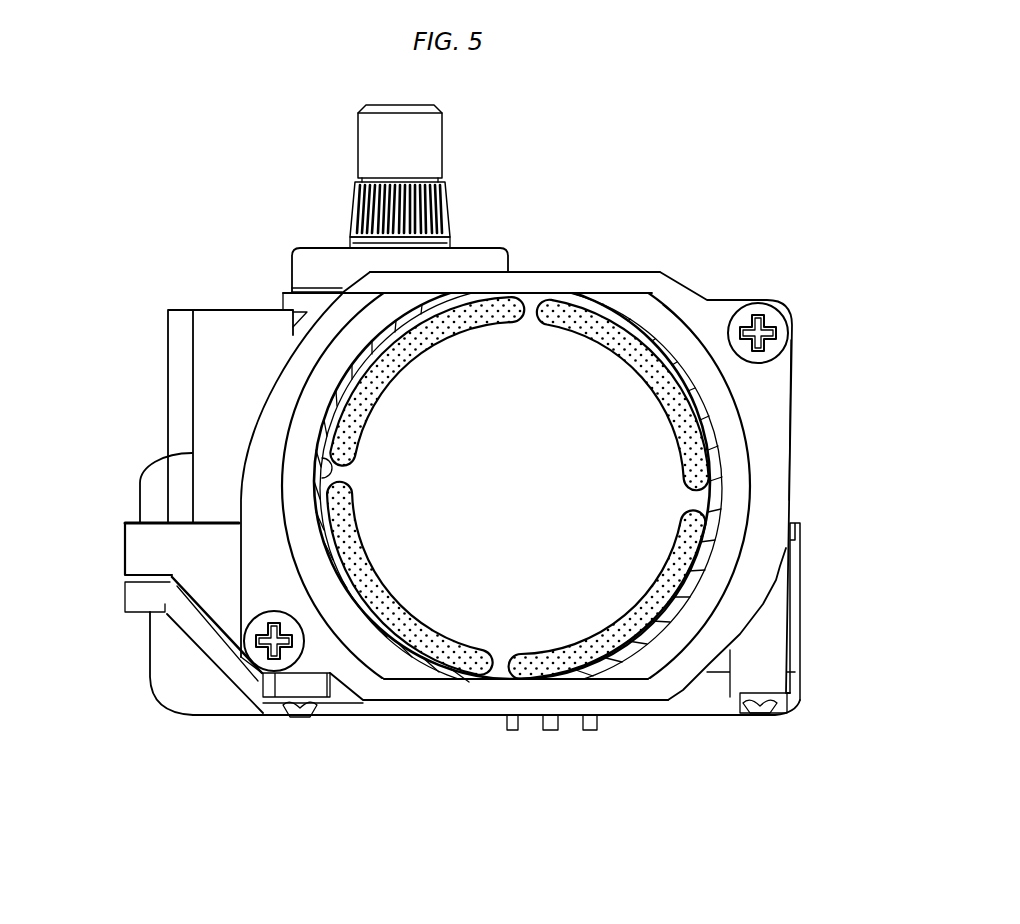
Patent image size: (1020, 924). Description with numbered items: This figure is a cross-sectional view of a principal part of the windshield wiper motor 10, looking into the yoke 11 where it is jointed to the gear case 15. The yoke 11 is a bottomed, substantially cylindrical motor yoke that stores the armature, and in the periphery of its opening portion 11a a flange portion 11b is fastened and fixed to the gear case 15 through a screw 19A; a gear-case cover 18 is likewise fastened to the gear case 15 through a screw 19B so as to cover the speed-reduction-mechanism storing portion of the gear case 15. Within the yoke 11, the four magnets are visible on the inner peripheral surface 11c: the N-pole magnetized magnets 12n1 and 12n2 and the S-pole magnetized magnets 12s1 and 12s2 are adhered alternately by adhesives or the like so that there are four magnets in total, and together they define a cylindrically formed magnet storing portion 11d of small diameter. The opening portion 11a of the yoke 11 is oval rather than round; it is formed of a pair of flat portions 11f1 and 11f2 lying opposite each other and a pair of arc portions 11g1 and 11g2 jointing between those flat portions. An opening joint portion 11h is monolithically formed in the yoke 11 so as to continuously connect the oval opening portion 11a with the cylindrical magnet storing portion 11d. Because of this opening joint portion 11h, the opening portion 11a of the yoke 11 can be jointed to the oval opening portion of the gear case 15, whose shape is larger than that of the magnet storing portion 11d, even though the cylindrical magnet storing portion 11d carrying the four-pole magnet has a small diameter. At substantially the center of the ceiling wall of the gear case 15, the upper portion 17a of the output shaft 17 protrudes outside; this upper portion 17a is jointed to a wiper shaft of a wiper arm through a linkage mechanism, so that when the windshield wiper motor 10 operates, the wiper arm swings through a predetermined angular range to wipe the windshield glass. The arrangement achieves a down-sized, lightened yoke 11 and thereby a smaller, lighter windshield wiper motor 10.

The windshield wiper motor 10 is at (487, 760).
The yoke 11 is at (738, 478).
The opening portion 11a is at (628, 292).
The flange portion 11b is at (778, 420).
The inner peripheral surface 11c is at (325, 468).
The magnet storing portion 11d is at (687, 340).
The flat portion 11f1 is at (580, 290).
The flat portion 11f2 is at (575, 680).
The arc portion 11g1 is at (278, 542).
The arc portion 11g2 is at (742, 550).
The opening joint portion 11h is at (700, 610).
The N-pole magnetized magnet 12n1 is at (363, 387).
The N-pole magnetized magnet 12n2 is at (630, 655).
The S-pole magnetized magnet 12s1 is at (437, 638).
The S-pole magnetized magnet 12s2 is at (677, 398).
The gear case 15 is at (135, 482).
The output shaft 17 is at (455, 236).
The upper portion of output shaft 17a is at (432, 130).
The gear-case cover 18 is at (690, 705).
The screw 19A is at (757, 318).
The screw 19B is at (295, 717).